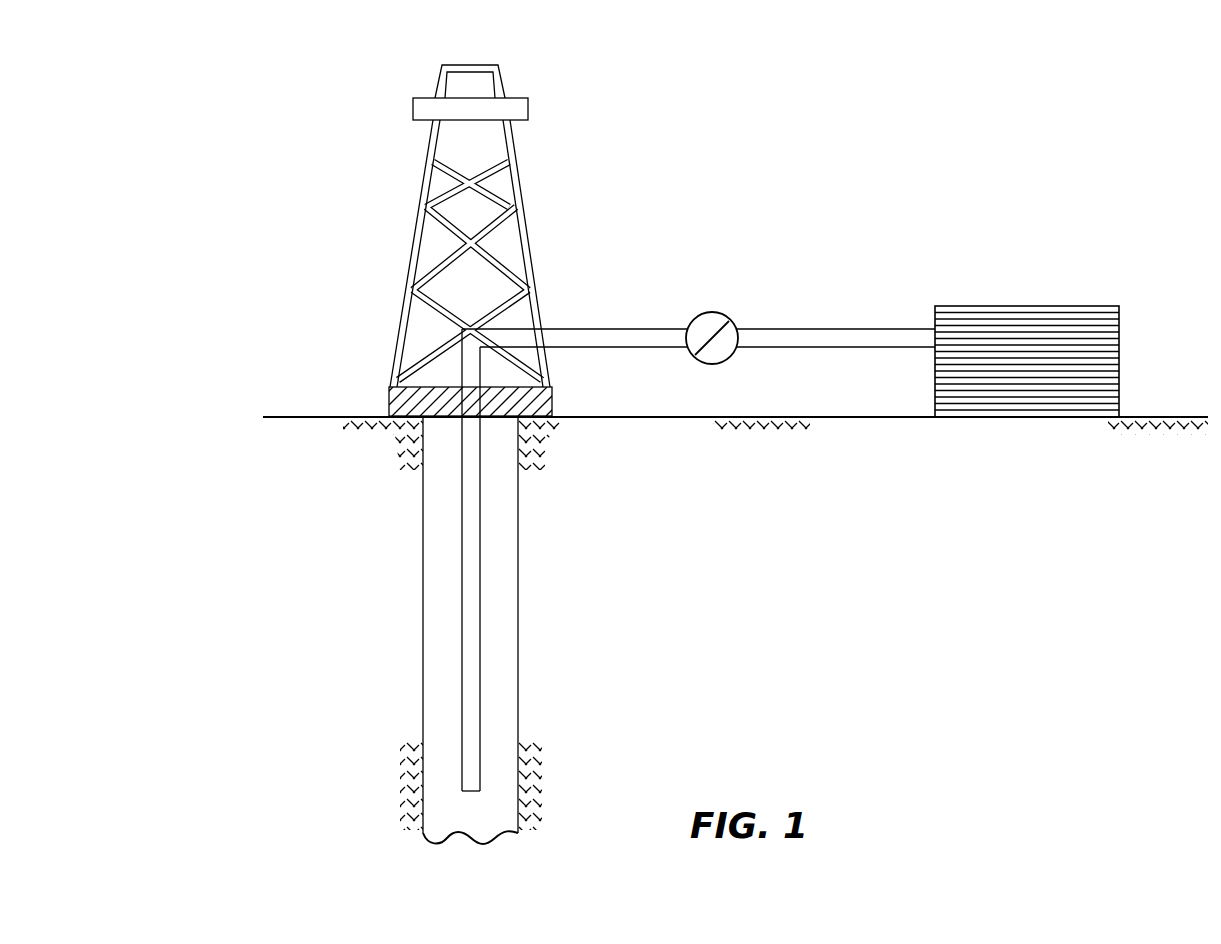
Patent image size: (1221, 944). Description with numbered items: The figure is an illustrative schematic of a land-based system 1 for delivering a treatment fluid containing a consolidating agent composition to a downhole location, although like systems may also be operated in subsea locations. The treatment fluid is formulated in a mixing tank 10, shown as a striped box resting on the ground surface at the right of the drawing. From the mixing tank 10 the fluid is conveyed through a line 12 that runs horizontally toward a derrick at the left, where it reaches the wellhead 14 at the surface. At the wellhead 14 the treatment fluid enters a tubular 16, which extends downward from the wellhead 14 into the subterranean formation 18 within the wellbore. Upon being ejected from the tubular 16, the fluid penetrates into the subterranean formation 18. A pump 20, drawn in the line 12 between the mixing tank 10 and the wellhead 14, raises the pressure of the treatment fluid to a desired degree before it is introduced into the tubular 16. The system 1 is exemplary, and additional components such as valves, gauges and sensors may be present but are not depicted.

The system 1 is at (265, 102).
The mixing tank 10 is at (1107, 305).
The line 12 is at (615, 328).
The wellhead 14 is at (388, 399).
The tubular 16 is at (480, 544).
The subterranean formation 18 is at (343, 644).
The pump 20 is at (720, 317).